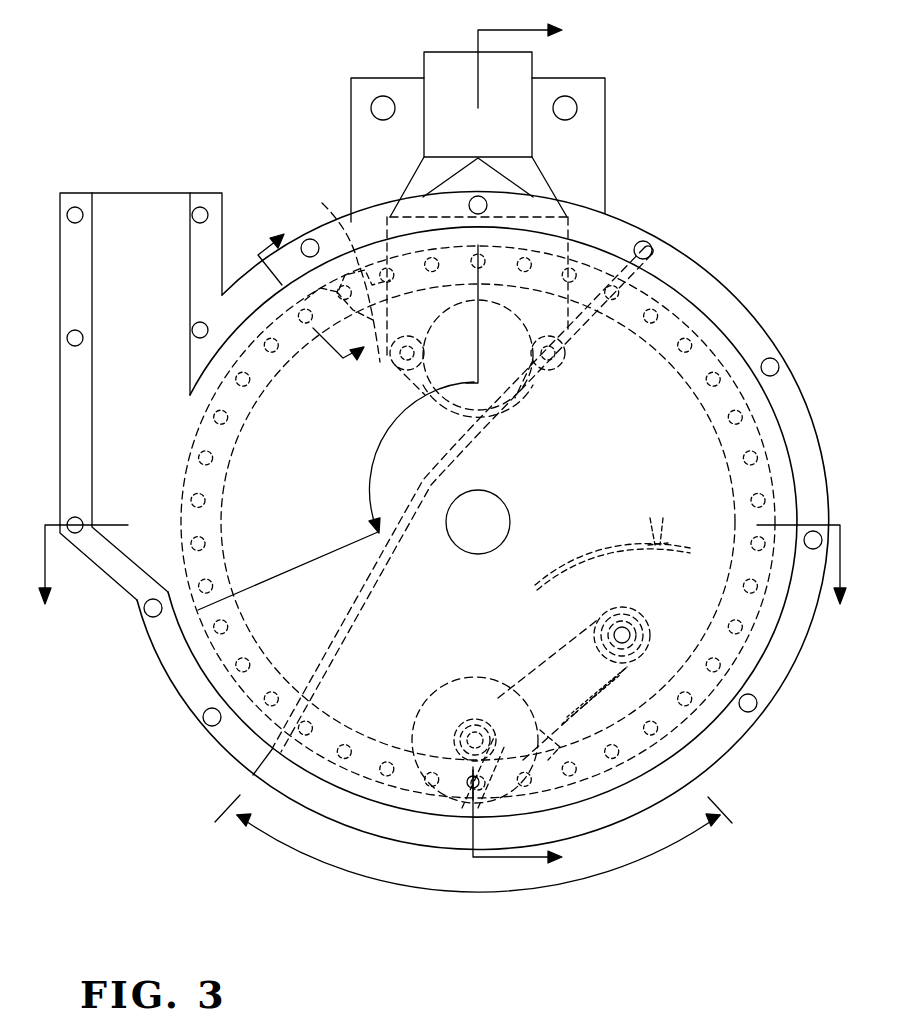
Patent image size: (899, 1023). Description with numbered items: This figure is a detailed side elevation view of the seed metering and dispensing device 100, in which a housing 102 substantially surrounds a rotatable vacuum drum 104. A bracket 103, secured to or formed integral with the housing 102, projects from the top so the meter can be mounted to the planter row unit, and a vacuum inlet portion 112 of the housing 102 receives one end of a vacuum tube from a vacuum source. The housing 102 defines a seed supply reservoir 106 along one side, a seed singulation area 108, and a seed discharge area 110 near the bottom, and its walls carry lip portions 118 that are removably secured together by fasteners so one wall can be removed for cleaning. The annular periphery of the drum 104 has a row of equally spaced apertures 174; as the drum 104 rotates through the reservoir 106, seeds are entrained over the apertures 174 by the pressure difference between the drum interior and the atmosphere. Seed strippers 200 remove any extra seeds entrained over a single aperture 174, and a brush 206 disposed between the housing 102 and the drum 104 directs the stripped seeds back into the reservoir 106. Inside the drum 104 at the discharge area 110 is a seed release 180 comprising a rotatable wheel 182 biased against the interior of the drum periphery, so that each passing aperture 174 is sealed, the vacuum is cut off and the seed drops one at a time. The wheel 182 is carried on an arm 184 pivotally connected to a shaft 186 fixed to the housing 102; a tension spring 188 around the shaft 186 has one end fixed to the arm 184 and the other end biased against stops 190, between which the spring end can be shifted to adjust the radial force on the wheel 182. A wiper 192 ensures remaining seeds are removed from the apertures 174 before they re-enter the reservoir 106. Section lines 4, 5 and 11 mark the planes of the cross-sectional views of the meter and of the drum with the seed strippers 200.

The seed metering and dispensing device 100 is at (684, 67).
The housing 102 is at (728, 287).
The bracket 103 is at (592, 140).
The rotatable vacuum drum 104 is at (228, 645).
The seed supply reservoir 106 is at (130, 225).
The seed singulation area 108 is at (373, 440).
The seed discharge area 110 is at (553, 883).
The vacuum inlet portion 112 is at (448, 60).
The lip portions 118 is at (792, 381).
The apertures 174 is at (204, 460).
The seed release 180 is at (560, 622).
The rotatable wheel 182 is at (432, 686).
The arm 184 is at (548, 650).
The shaft 186 is at (634, 618).
The tension spring 188 is at (612, 583).
The stops 190 is at (667, 506).
The wiper 192 is at (470, 805).
The seed strippers 200 is at (420, 296).
The brush 206 is at (467, 433).
The section line 4- 4 is at (528, 444).
The section line 5- 5 is at (439, 588).
The section line 11- 11 is at (303, 293).